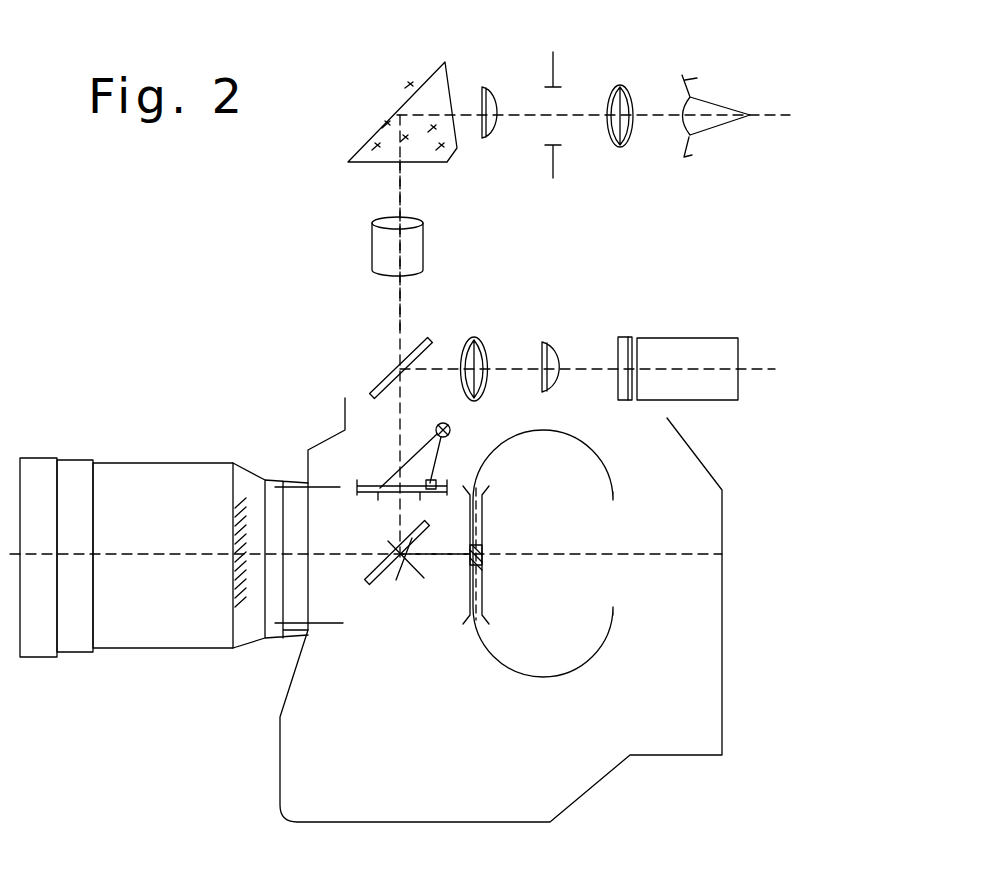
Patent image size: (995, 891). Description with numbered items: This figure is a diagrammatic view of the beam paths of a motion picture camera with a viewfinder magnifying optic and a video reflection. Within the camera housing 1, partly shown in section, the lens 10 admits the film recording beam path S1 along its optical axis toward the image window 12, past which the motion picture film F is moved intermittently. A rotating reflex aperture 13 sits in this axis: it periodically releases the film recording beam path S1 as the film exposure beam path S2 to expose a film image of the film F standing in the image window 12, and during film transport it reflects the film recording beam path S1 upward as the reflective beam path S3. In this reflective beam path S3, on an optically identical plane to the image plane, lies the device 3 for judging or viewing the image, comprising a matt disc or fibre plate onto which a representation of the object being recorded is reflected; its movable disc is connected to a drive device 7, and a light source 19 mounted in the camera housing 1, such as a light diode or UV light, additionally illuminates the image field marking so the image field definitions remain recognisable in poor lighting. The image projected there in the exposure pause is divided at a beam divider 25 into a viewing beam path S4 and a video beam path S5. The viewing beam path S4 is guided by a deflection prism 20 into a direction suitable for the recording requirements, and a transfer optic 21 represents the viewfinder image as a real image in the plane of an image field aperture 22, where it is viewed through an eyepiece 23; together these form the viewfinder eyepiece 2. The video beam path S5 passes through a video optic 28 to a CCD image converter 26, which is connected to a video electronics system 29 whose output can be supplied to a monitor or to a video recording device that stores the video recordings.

The camera housing 1 is at (680, 677).
The viewfinder eyepiece 2 is at (526, 28).
The device for judging the image 3 is at (377, 485).
The drive device 7 is at (436, 483).
The lens 10 is at (142, 630).
The image window 12 is at (480, 557).
The rotating reflex aperture 13 is at (400, 592).
The light source 19 is at (450, 428).
The deflection prism 20 is at (400, 103).
The transfer optic 21 is at (482, 95).
The image field aperture 22 is at (556, 168).
The eyepiece 23 is at (610, 85).
The beam divider 25 is at (350, 390).
The CCD image converter 26 is at (622, 337).
The video optic 28 is at (545, 352).
The video electronics system 29 is at (722, 355).
The film recording beam path S1 is at (163, 553).
The film exposure beam path S2 is at (450, 560).
The reflective beam path S3 is at (400, 427).
The viewing beam path S4 is at (397, 195).
The video beam path S5 is at (583, 368).
The motion picture film F is at (493, 445).